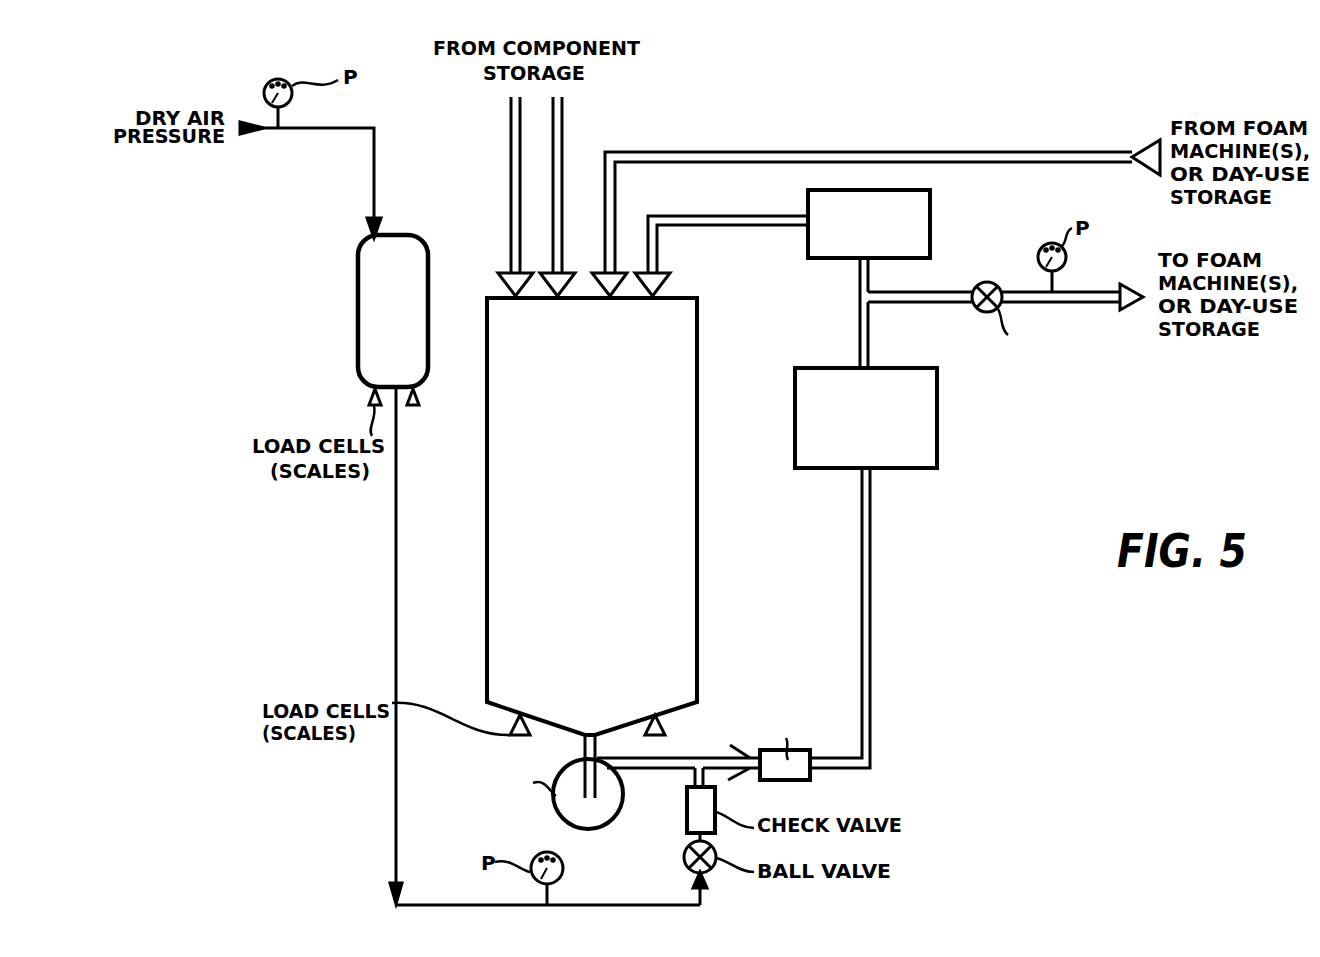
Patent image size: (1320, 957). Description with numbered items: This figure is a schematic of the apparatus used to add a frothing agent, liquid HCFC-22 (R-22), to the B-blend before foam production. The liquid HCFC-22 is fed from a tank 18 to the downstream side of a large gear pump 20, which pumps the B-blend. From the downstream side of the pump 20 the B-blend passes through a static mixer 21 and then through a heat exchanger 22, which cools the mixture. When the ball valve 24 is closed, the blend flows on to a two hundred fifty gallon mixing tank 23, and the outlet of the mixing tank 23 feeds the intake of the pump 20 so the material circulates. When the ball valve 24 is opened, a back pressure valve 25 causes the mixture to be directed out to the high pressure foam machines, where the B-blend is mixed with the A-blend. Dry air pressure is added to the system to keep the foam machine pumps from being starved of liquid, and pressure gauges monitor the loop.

The tank 18 is at (398, 242).
The gear pump 20 is at (612, 820).
The static mixer 21 is at (812, 778).
The heat exchanger 22 is at (912, 456).
The mixing tank 23 is at (682, 330).
The ball valve 24 is at (980, 283).
The back pressure valve 25 is at (808, 200).